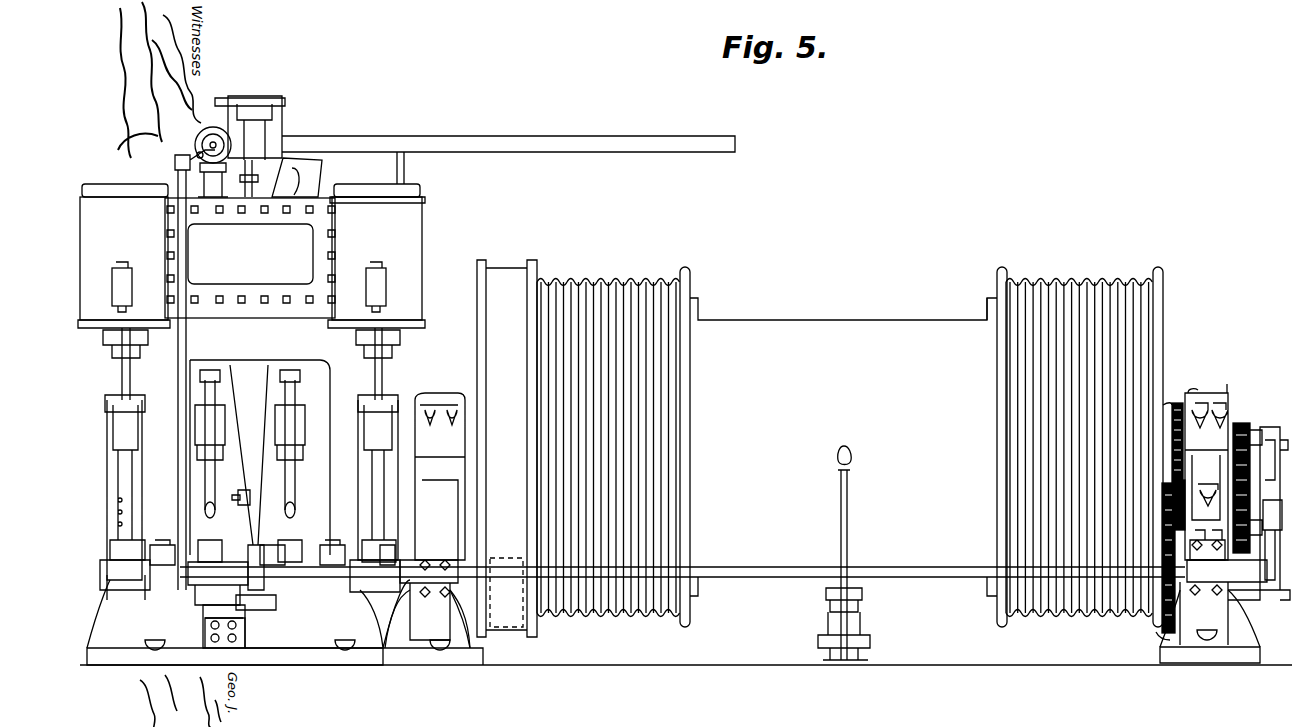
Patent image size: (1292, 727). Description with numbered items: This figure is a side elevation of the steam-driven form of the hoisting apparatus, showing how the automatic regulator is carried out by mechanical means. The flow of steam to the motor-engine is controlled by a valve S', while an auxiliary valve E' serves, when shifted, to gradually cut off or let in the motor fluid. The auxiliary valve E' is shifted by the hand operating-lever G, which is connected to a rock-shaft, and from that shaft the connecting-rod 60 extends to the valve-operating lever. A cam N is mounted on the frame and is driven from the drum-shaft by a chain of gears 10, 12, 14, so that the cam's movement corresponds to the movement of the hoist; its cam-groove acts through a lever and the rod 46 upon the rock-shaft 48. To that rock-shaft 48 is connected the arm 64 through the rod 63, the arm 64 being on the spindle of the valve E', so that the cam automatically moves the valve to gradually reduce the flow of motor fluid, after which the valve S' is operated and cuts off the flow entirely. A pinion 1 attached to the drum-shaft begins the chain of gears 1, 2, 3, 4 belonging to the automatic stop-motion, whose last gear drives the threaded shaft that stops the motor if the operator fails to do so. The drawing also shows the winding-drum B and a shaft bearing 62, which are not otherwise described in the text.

The pinion 1 is at (1176, 403).
The gear 2 is at (1162, 522).
The gear 3 is at (1165, 490).
The gear 4 is at (1158, 632).
The gear 10 is at (1228, 438).
The gear 12 is at (1228, 462).
The gear 14 is at (1223, 602).
The rod 46 is at (1235, 495).
The rock-shaft 48 is at (748, 562).
The connecting-rod 60 is at (404, 170).
The crank shaft bearing 62 is at (208, 600).
The rod 63 is at (186, 348).
The arm 64 is at (176, 156).
The winding drum B is at (820, 448).
The hand operating-lever G is at (844, 553).
The auxiliary valve E' is at (231, 146).
The valve S' is at (303, 176).
The cam N is at (1256, 425).